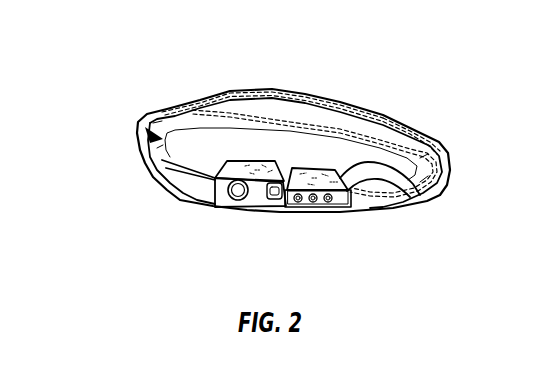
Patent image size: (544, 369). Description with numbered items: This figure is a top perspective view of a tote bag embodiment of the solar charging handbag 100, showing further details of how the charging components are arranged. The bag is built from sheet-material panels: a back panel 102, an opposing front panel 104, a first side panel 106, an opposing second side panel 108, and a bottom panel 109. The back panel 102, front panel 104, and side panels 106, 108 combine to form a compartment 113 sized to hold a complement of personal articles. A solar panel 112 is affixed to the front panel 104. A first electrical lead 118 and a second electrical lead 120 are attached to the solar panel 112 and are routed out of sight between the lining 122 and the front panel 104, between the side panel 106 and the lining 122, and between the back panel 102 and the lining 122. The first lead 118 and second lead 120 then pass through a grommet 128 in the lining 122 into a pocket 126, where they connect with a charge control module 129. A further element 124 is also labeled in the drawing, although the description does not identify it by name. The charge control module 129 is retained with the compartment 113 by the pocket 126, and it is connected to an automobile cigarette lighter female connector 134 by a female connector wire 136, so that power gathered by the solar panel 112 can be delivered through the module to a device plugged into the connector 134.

The solar charging handbag 100 is at (378, 58).
The back panel 102 is at (182, 192).
The front panel 104 is at (168, 107).
The first side panel 106 is at (453, 170).
The second side panel 108 is at (137, 130).
The bottom panel 109 is at (242, 146).
The solar panel 112 is at (302, 98).
The compartment 113 is at (147, 131).
The first electrical lead 118 is at (380, 135).
The second electrical lead 120 is at (400, 124).
The lining 122 is at (163, 125).
The sensor lens 124 is at (223, 193).
The pocket 126 is at (373, 188).
The grommet 128 is at (300, 183).
The charge control module 129 is at (412, 190).
The automobile cigarette lighter female connector 134 is at (182, 161).
The female connector wire 136 is at (270, 200).